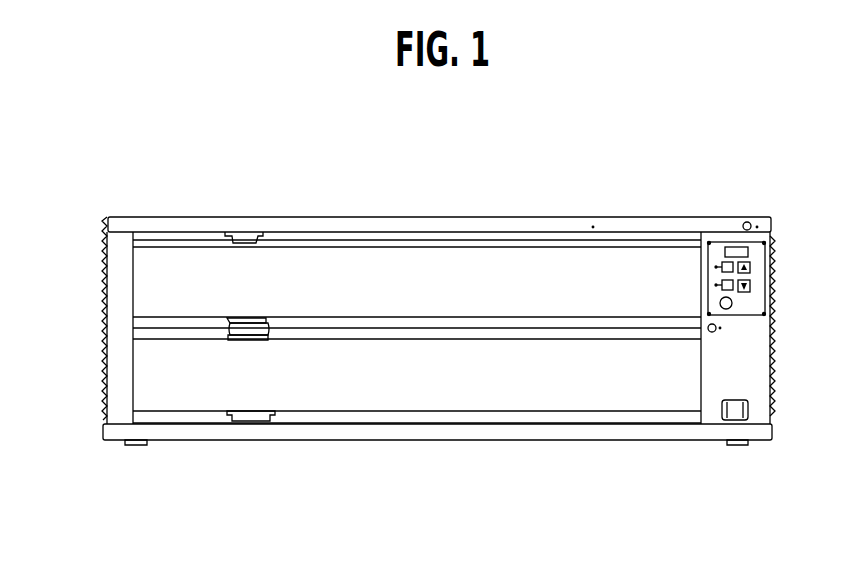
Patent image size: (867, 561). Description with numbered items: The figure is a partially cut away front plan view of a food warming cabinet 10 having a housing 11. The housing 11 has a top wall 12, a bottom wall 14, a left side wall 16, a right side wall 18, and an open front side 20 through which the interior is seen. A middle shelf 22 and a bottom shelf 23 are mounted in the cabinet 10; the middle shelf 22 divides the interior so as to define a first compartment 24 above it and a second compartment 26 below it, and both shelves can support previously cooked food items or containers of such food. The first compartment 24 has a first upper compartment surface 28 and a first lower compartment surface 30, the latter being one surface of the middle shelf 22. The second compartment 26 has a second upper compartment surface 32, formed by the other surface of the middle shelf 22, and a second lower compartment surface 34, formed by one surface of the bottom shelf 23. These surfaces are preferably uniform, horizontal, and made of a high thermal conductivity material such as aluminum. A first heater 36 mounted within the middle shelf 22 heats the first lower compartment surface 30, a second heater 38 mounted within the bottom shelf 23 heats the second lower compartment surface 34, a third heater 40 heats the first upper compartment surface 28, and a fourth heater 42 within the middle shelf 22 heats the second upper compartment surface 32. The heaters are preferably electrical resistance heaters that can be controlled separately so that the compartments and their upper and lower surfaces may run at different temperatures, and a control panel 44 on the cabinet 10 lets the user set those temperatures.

The food warming cabinet 10 is at (427, 346).
The housing 11 is at (94, 400).
The top wall 12 is at (190, 217).
The bottom wall 14 is at (610, 441).
The left side wall 16 is at (107, 323).
The right side wall 18 is at (770, 338).
The open front side 20 is at (126, 273).
The middle shelf 22 is at (501, 310).
The bottom shelf 23 is at (410, 424).
The first compartment 24 is at (318, 233).
The second compartment 26 is at (665, 420).
The first upper compartment surface 28 is at (397, 242).
The first lower compartment surface 30 is at (610, 317).
The second upper compartment surface 32 is at (523, 340).
The second lower compartment surface 34 is at (212, 411).
The first heater 36 is at (242, 318).
The second heater 38 is at (257, 421).
The third heater 40 is at (248, 232).
The fourth heater 42 is at (243, 343).
The control panel 44 is at (762, 257).